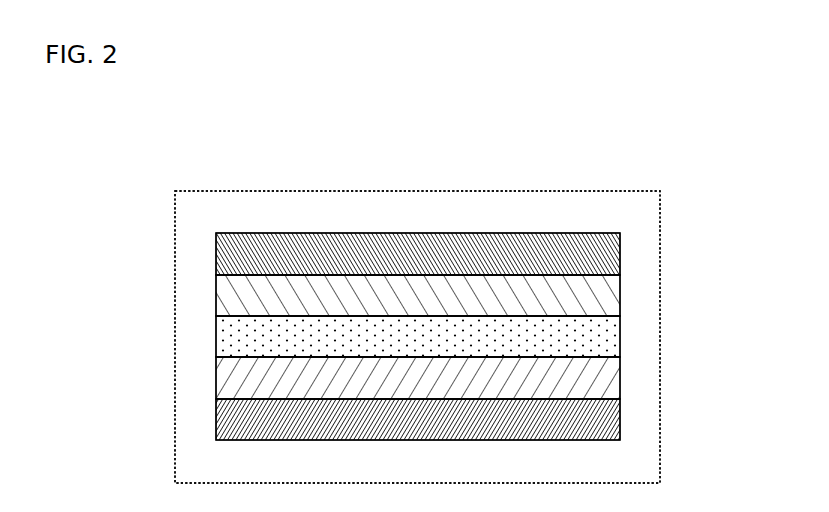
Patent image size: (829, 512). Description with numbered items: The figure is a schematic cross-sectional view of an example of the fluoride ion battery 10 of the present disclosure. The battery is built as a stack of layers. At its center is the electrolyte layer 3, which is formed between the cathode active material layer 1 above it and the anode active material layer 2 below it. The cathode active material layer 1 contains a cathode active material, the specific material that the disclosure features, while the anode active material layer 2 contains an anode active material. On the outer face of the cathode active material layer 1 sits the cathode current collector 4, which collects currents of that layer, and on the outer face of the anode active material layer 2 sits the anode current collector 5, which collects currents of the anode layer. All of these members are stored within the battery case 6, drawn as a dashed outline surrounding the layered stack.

The fluoride ion battery 10 is at (642, 165).
The battery case 6 is at (632, 218).
The cathode current collector 4 is at (620, 257).
The cathode active material layer 1 is at (590, 300).
The electrolyte layer 3 is at (590, 342).
The anode active material layer 2 is at (590, 382).
The anode current collector 5 is at (620, 422).